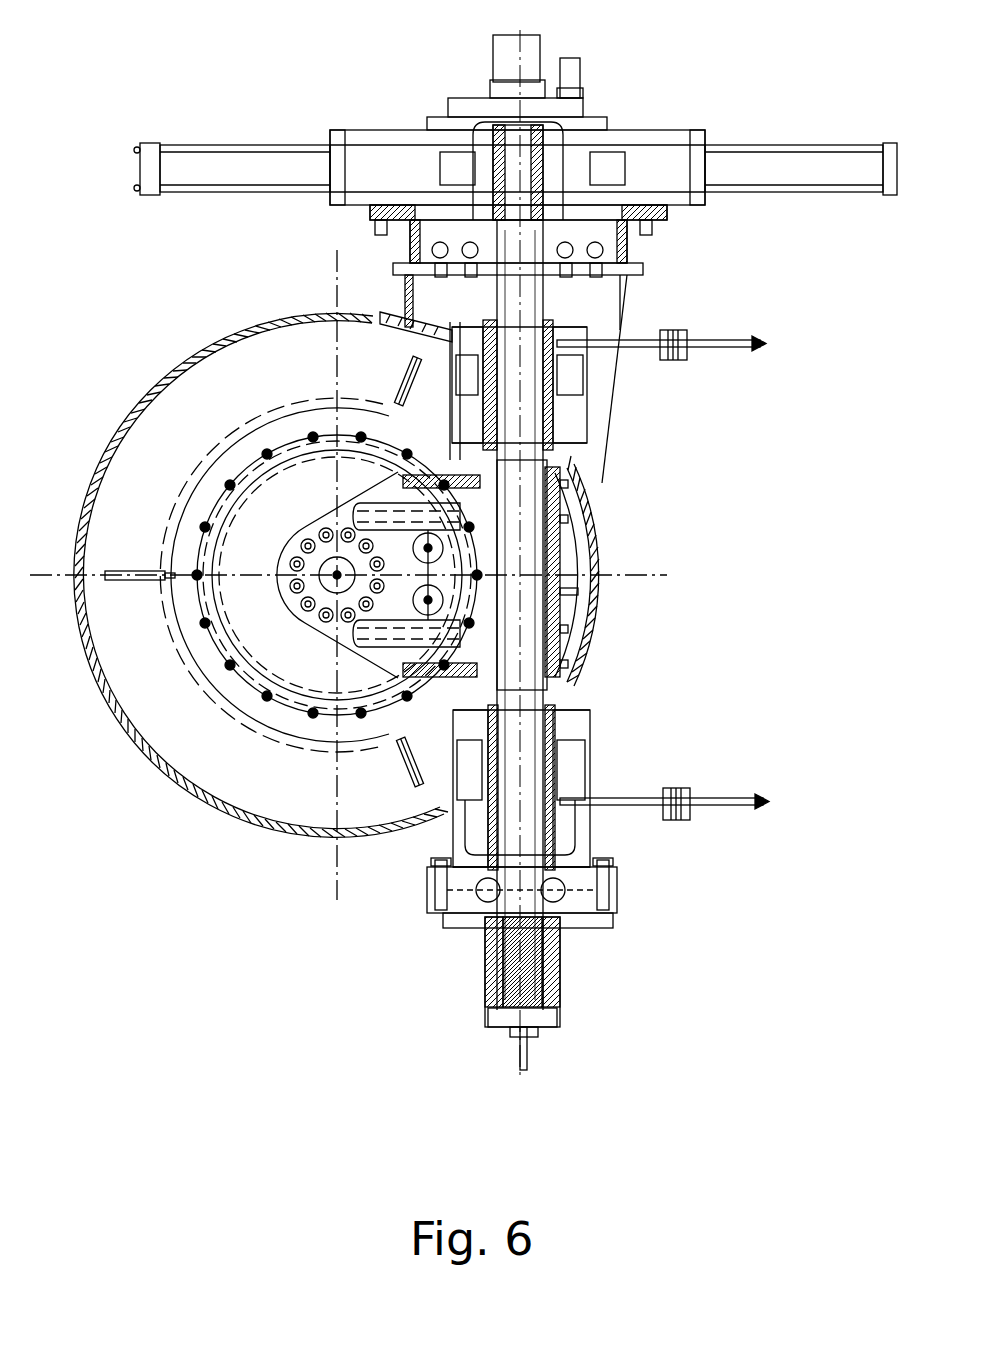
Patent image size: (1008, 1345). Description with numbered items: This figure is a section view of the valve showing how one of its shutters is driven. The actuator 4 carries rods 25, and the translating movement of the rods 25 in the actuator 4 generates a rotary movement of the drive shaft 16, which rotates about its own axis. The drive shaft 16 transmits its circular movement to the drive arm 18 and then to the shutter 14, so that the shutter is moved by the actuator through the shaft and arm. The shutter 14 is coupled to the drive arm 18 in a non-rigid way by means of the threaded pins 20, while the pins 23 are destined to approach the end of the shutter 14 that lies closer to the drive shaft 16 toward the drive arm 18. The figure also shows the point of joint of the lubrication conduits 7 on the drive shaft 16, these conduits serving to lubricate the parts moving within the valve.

The actuator 4 is at (515, 148).
The lubrication conduits 7 is at (713, 340).
The shutter 14 is at (295, 663).
The drive shaft 16 is at (513, 725).
The drive arm 18 is at (393, 665).
The threaded pins 20 is at (313, 440).
The pins 23 is at (430, 548).
The rods 25 is at (170, 152).